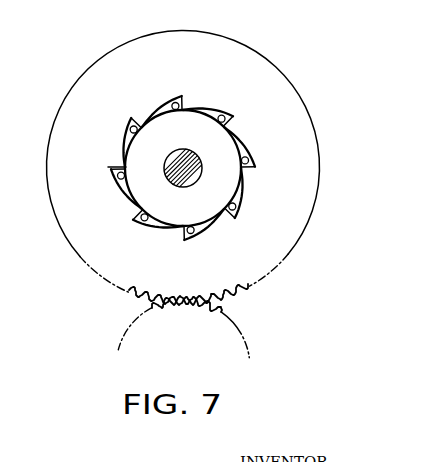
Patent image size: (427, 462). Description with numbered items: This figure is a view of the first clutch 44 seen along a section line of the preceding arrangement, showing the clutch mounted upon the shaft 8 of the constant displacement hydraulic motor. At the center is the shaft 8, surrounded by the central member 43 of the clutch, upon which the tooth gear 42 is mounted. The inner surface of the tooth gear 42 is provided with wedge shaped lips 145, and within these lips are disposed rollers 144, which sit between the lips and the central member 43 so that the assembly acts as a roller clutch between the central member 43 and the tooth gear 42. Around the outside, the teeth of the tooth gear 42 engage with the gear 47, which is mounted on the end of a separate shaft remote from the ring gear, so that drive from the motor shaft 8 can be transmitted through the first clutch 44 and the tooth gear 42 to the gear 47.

The shaft 8 is at (199, 156).
The tooth gear 42 is at (97, 266).
The central member 43 is at (165, 208).
The first clutch 44 is at (125, 187).
The gear 47 is at (132, 333).
The rollers 144 is at (250, 158).
The wedge shaped lips 145 is at (207, 108).